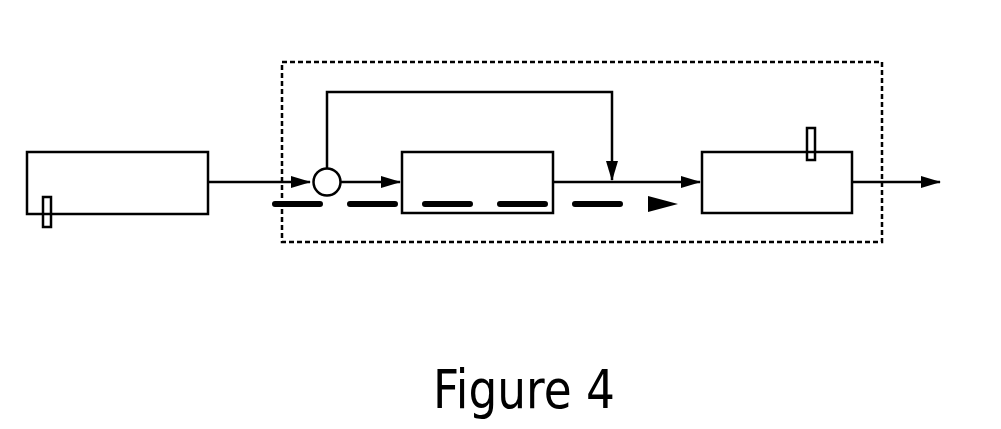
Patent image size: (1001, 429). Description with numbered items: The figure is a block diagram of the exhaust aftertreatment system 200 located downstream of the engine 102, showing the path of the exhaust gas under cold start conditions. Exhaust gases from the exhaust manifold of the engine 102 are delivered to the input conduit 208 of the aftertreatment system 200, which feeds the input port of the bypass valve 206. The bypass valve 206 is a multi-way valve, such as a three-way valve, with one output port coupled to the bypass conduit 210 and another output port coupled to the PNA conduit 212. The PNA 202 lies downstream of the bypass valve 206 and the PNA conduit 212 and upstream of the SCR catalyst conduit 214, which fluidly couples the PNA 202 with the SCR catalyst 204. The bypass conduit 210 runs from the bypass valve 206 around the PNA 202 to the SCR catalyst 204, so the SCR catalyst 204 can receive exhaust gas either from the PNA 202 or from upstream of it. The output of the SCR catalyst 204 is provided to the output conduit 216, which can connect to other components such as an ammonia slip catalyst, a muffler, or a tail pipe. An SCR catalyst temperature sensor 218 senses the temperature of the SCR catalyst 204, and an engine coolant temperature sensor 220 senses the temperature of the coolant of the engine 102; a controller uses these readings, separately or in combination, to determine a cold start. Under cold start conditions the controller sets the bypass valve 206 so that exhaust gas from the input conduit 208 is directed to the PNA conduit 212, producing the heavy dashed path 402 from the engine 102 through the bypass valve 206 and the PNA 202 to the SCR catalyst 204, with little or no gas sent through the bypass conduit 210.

The engine 102 is at (118, 152).
The engine coolant temperature sensor 220 is at (47, 227).
The input conduit 208 is at (240, 183).
The bypass valve 206 is at (327, 196).
The bypass conduit 210 is at (508, 92).
The PNA conduit 212 is at (368, 180).
The PNA 202 is at (465, 213).
The path of the exhaust gas 402 is at (380, 206).
The SCR catalyst conduit 214 is at (643, 180).
The SCR catalyst 204 is at (775, 213).
The SCR catalyst temperature sensor 218 is at (811, 128).
The output conduit 216 is at (910, 178).
The exhaust aftertreatment system 200 is at (615, 242).